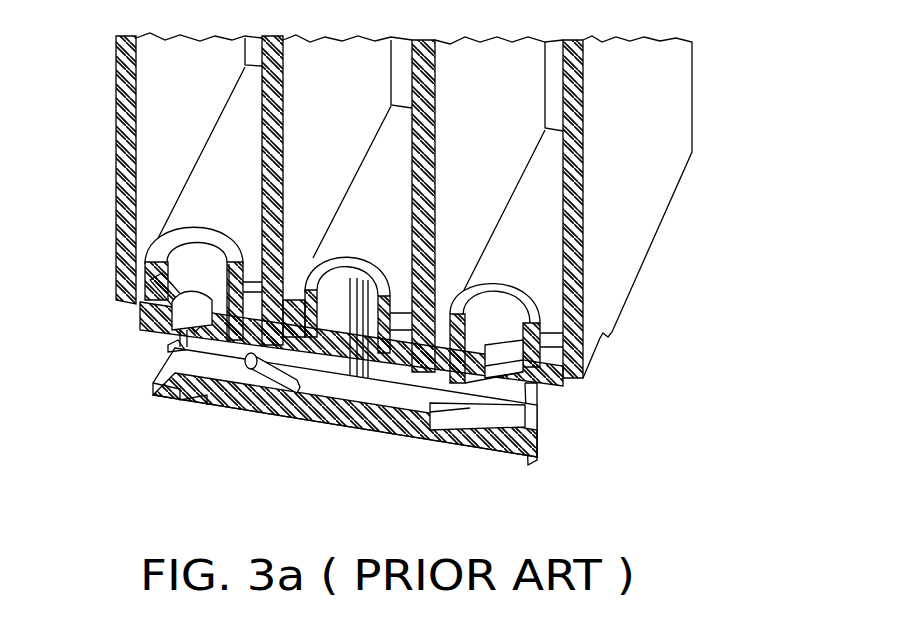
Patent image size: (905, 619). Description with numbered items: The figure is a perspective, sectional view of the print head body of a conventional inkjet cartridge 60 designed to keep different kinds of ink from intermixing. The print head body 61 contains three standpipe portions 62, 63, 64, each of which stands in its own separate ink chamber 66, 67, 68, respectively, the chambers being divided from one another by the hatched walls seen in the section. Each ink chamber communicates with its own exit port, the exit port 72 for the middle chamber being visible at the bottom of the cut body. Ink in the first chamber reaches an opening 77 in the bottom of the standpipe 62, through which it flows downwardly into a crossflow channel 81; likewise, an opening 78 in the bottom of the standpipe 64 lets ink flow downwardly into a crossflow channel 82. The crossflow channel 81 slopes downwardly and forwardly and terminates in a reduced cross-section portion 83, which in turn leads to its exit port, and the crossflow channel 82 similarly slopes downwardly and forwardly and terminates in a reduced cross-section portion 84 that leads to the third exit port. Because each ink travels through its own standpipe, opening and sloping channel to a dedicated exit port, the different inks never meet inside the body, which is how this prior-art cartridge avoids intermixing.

The inkjet cartridge 60 is at (680, 233).
The print head body 61 is at (692, 96).
The standpipe portion 62 is at (147, 260).
The standpipe portion 63 is at (305, 290).
The standpipe portion 64 is at (470, 292).
The ink chamber 66 is at (233, 123).
The ink chamber 67 is at (378, 157).
The ink chamber 68 is at (477, 140).
The exit port 72 is at (364, 420).
The opening 77 is at (217, 330).
The opening 78 is at (455, 395).
The crossflow channel 81 is at (178, 350).
The crossflow channel 82 is at (503, 420).
The reduced cross-section portion 83 is at (250, 353).
The reduced cross-section portion 84 is at (482, 385).